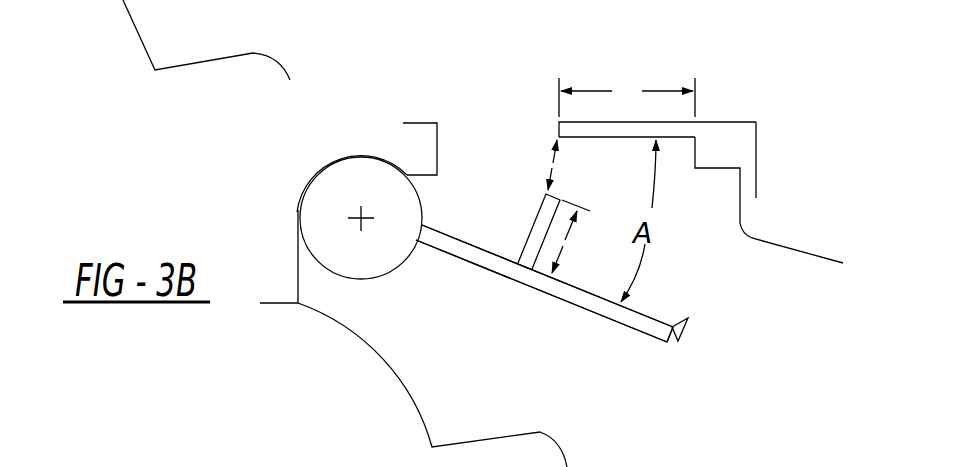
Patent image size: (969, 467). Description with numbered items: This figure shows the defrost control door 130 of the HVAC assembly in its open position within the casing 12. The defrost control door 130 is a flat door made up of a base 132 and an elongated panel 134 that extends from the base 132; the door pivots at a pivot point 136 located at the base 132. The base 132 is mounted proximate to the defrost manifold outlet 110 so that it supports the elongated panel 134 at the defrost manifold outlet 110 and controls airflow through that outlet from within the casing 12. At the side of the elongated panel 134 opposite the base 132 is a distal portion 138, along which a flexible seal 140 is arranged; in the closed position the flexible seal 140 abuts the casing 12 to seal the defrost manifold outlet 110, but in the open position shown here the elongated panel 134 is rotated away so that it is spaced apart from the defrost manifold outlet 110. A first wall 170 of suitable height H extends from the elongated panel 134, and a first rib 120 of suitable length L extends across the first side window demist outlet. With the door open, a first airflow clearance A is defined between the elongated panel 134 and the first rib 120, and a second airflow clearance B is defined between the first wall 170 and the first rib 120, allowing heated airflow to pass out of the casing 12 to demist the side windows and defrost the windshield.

The casing 12 is at (697, 140).
The defrost manifold outlet 110 is at (498, 122).
The first rib 120 is at (606, 127).
The defrost control door 130 is at (510, 296).
The base 132 is at (320, 217).
The elongated panel 134 is at (607, 312).
The pivot point 136 is at (353, 216).
The distal portion 138 is at (677, 342).
The flexible seal 140 is at (687, 330).
The first wall 170 is at (540, 213).